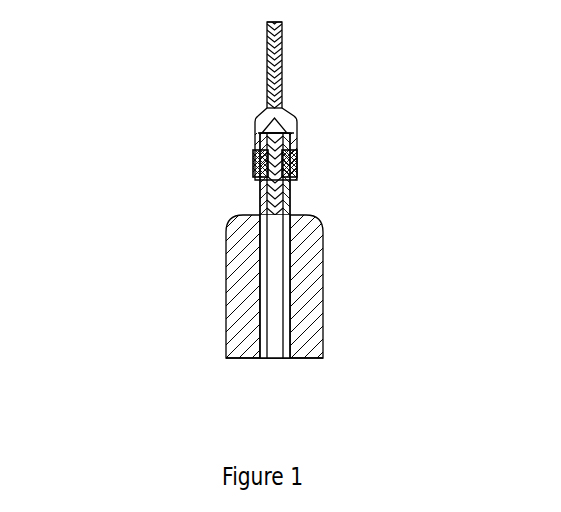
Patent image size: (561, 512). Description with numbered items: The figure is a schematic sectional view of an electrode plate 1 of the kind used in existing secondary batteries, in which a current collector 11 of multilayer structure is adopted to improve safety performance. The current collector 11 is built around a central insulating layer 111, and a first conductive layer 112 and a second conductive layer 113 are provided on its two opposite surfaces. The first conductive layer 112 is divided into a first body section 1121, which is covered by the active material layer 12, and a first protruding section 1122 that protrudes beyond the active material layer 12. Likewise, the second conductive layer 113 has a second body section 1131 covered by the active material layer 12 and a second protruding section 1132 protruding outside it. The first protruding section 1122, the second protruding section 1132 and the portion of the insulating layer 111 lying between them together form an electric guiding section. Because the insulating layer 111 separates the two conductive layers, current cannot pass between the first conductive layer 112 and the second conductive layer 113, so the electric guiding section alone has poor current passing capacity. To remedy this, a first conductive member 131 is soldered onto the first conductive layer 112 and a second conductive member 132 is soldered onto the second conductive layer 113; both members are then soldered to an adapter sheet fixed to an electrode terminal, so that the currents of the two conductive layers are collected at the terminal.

The electrode plate 1 is at (112, 88).
The current collector 11 is at (260, 378).
The insulating layer 111 is at (272, 359).
The first conductive layer 112 is at (162, 184).
The first body section 1121 is at (260, 243).
The first protruding section 1122 is at (260, 207).
The second conductive layer 113 is at (387, 184).
The second body section 1131 is at (291, 243).
The second protruding section 1132 is at (290, 207).
The active material layer 12 is at (226, 313).
The first conductive member 131 is at (270, 65).
The second conductive member 132 is at (280, 72).